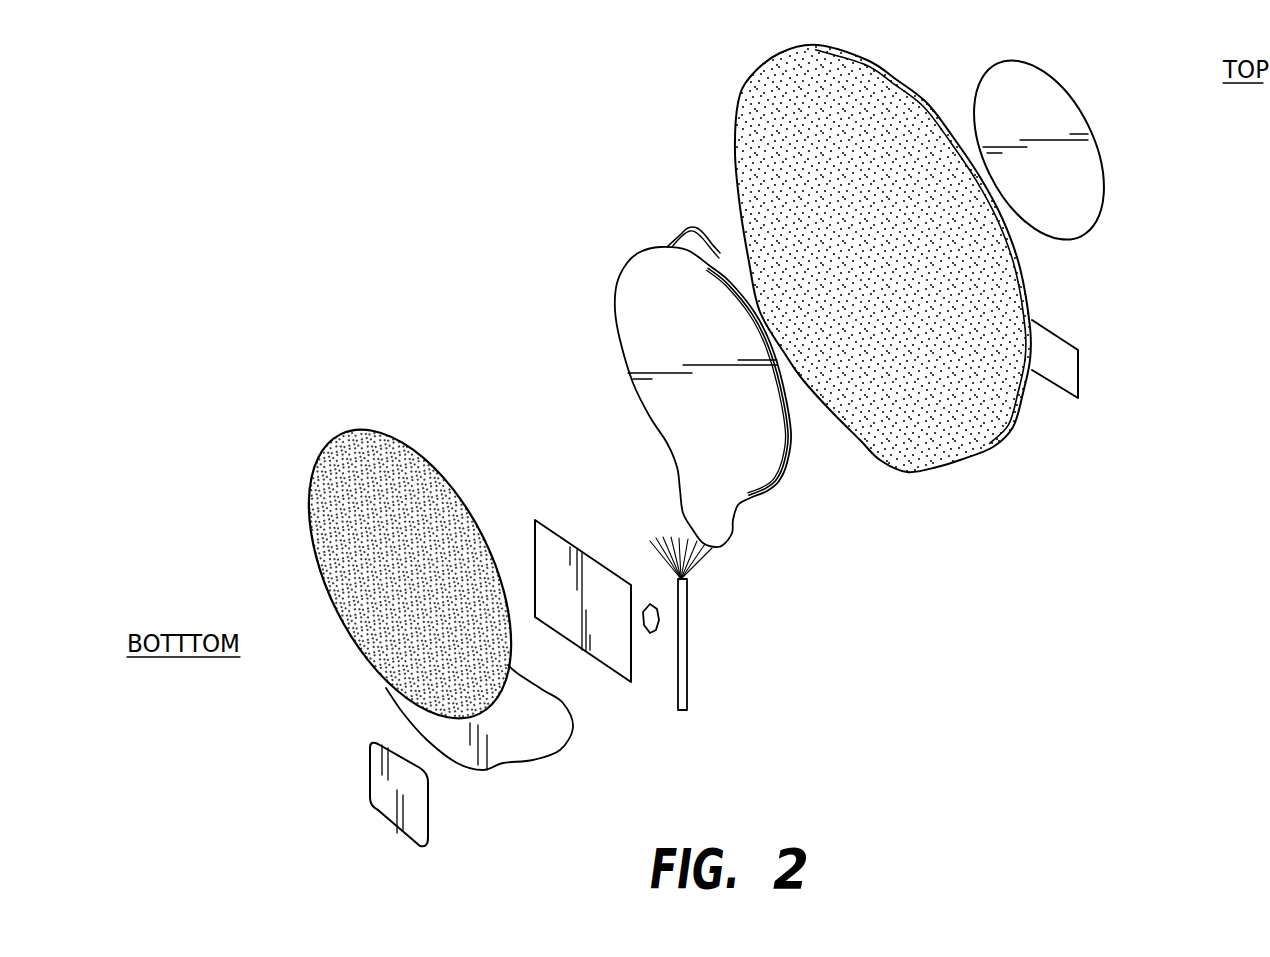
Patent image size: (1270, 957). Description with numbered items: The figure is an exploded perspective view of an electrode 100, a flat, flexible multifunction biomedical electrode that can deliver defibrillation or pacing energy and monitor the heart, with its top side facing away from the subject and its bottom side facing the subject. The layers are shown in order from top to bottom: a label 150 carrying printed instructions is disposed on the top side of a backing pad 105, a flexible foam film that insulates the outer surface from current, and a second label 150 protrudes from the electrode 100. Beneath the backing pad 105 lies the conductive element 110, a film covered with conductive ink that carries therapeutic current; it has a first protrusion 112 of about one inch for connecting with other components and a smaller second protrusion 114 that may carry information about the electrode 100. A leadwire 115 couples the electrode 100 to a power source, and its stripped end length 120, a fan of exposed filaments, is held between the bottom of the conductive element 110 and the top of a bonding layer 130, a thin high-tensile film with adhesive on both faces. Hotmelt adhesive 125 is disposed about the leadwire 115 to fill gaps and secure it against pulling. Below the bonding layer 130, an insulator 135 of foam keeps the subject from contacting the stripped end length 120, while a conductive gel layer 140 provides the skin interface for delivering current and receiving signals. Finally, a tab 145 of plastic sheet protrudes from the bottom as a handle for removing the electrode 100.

The electrode 100 is at (425, 195).
The backing pad 105 is at (752, 82).
The conductive element 110 is at (630, 253).
The first protrusion 112 is at (733, 530).
The second protrusion 114 is at (690, 228).
The leadwire 115 is at (688, 658).
The stripped end length 120 is at (707, 557).
The hotmelt adhesive 125 is at (650, 603).
The bonding layer 130 is at (540, 517).
The insulator 135 is at (507, 768).
The conductive gel layer 140 is at (338, 441).
The tab 145 is at (370, 807).
The label 150 is at (1093, 138).